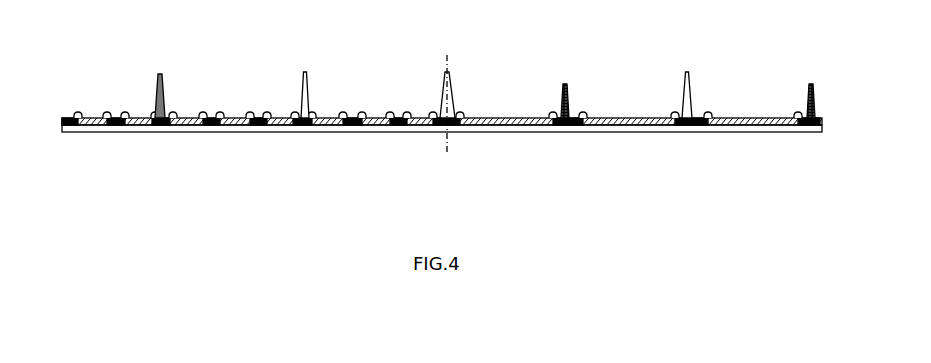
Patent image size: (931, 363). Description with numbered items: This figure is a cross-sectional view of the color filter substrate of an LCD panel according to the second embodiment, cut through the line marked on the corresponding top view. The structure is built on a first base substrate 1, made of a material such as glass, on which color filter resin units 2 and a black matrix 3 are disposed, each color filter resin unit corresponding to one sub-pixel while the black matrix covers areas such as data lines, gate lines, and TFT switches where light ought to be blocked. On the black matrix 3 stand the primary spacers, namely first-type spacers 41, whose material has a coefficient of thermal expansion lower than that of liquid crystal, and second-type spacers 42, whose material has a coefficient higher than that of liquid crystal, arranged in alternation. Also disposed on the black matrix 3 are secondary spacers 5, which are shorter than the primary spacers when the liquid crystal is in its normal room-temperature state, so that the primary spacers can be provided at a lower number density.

The first base substrate 1 is at (128, 132).
The color filter resin units 2 is at (300, 132).
The black matrix 3 is at (368, 132).
The first-type spacers 41 is at (166, 82).
The second-type spacers 42 is at (308, 82).
The secondary spacers 5 is at (569, 89).